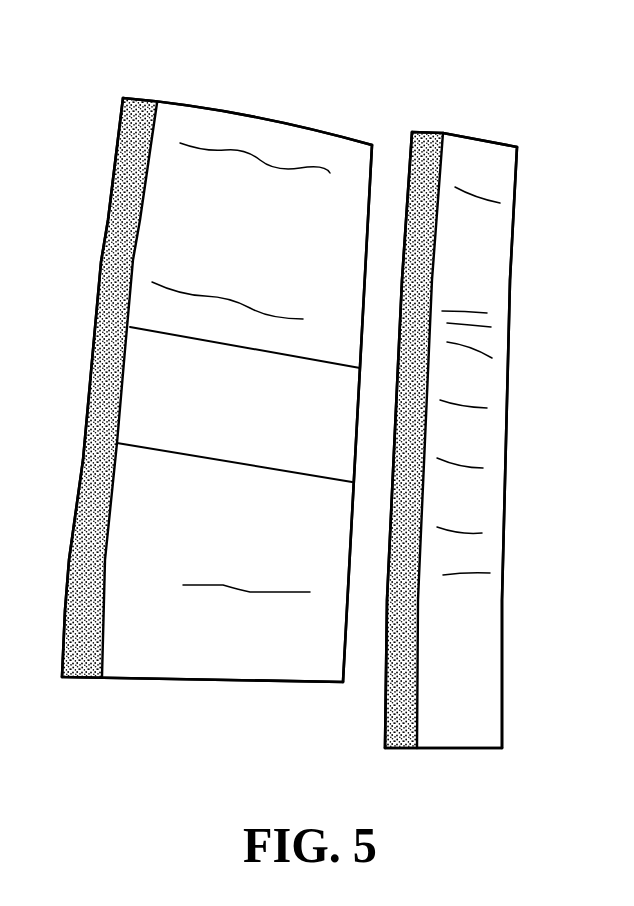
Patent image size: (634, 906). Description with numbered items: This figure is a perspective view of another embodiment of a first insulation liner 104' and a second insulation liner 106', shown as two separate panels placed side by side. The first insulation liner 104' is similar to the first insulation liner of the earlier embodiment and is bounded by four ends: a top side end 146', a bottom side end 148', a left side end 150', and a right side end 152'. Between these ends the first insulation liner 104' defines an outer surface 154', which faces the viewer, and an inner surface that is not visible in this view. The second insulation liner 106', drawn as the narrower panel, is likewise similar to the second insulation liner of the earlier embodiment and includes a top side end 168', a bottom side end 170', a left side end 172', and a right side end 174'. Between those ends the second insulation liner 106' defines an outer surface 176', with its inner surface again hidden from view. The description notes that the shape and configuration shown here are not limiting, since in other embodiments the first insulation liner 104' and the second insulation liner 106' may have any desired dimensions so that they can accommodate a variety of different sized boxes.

The first insulation liner 104' is at (217, 364).
The top side end 146' is at (79, 387).
The left side end 150' is at (249, 86).
The bottom side end 148' is at (333, 453).
The right side end 152' is at (202, 720).
The outer surface 154' is at (186, 404).
The second insulation liner 106' is at (493, 436).
The right side end 174' is at (386, 472).
The top side end 168' is at (474, 97).
The left side end 172' is at (549, 448).
The bottom side end 170' is at (472, 788).
The outer surface 176' is at (517, 381).